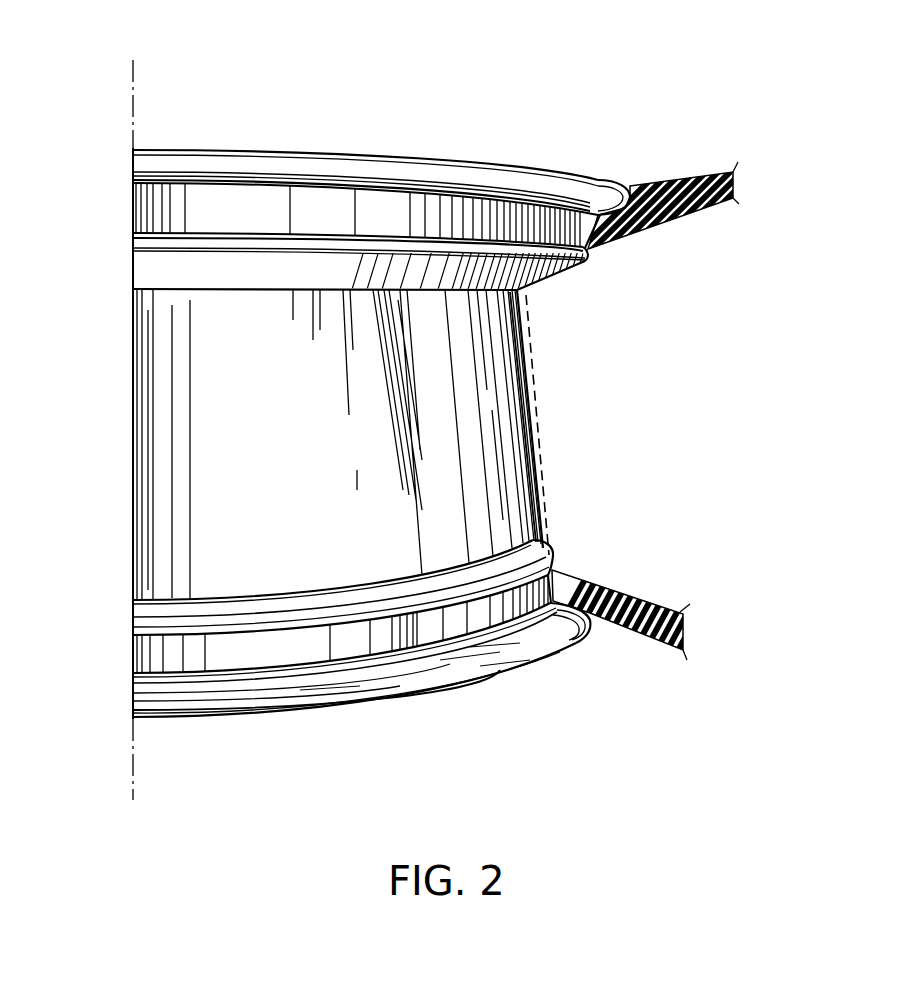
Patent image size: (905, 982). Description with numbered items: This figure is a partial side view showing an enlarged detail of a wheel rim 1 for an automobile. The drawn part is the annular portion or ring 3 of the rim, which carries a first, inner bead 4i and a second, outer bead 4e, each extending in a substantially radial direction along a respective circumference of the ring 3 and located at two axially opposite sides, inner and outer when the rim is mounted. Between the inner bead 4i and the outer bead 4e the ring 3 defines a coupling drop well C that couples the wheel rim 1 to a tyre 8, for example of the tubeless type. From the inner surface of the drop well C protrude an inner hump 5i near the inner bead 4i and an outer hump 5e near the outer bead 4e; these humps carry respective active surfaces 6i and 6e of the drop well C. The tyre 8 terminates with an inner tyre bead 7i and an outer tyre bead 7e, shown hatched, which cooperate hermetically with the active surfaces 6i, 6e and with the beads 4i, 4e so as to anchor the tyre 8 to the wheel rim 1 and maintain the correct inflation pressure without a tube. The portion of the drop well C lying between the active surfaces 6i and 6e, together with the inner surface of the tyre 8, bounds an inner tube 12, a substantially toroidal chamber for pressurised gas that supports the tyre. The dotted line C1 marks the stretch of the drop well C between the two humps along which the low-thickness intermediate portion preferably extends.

The wheel rim 1 is at (338, 80).
The annular portion or ring 3 is at (262, 420).
The outer bead 4e is at (470, 170).
The inner bead 4i is at (330, 697).
The outer hump 5e is at (584, 260).
The inner hump 5i is at (547, 546).
The outer active surface 6e is at (308, 217).
The inner active surface 6i is at (250, 671).
The outer tyre bead 7e is at (628, 228).
The inner tyre bead 7i is at (608, 590).
The tyre 8 is at (687, 180).
The inner tube 12 is at (745, 252).
The coupling drop well C is at (675, 386).
The dotted line of the low-thickness intermediate portion C1 is at (545, 436).